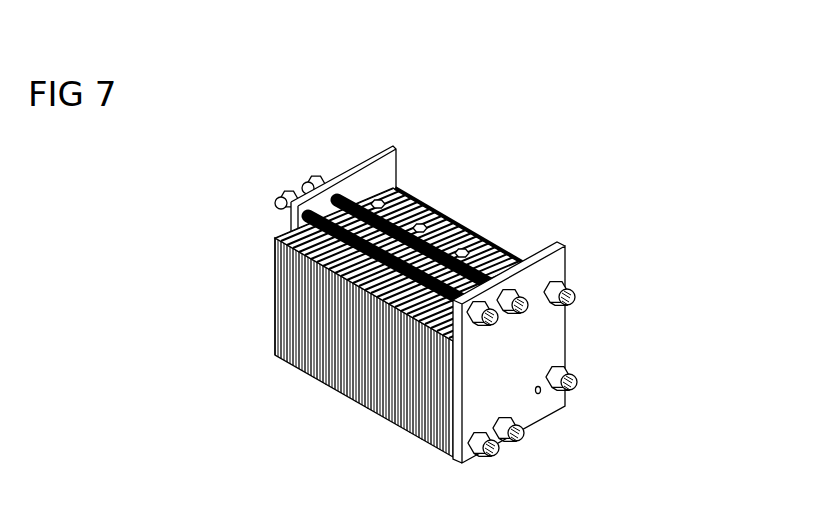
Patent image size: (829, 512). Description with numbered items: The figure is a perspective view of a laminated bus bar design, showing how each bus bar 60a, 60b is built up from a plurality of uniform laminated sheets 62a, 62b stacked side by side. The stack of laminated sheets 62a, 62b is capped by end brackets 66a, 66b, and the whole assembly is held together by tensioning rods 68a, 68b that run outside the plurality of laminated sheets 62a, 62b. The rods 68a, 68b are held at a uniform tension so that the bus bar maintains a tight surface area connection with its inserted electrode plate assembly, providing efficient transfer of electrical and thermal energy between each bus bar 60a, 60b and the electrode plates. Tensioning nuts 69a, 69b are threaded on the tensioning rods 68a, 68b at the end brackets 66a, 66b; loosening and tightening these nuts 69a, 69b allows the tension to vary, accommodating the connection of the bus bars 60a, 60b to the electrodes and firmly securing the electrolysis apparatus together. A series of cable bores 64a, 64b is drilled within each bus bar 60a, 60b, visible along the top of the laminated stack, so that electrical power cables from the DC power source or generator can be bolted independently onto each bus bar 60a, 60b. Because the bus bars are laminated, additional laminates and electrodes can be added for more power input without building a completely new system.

The bus bar 60a is at (397, 250).
The bus bar 60b is at (333, 128).
The laminated sheets 62a is at (426, 151).
The laminated sheets 62b is at (400, 188).
The cable bores 64a is at (489, 202).
The cable bores 64b is at (436, 208).
The end bracket 66a is at (620, 352).
The end bracket 66b is at (567, 320).
The tensioning rod 68a is at (511, 246).
The tensioning rod 68b is at (504, 248).
The tensioning nut 69a is at (627, 369).
The tensioning nut 69b is at (566, 405).